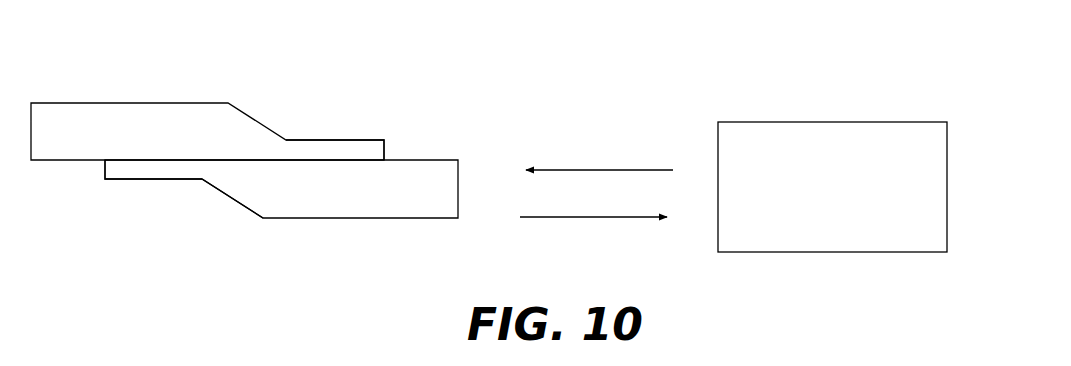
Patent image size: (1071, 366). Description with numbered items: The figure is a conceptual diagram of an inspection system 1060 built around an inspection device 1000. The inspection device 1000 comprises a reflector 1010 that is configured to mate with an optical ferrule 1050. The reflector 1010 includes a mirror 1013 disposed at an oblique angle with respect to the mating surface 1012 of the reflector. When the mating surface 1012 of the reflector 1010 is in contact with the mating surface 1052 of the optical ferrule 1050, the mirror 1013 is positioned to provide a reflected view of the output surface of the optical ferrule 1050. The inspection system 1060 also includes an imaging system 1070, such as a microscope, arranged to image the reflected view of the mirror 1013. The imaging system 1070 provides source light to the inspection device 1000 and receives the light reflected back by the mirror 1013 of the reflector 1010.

The inspection device 1000 is at (246, 180).
The reflector 1010 is at (283, 210).
The mating surface 1012 is at (343, 158).
The mirror 1013 is at (242, 207).
The optical ferrule 1050 is at (222, 100).
The mating surface 1052 is at (183, 162).
The inspection system 1060 is at (546, 48).
The imaging system 1070 is at (820, 137).